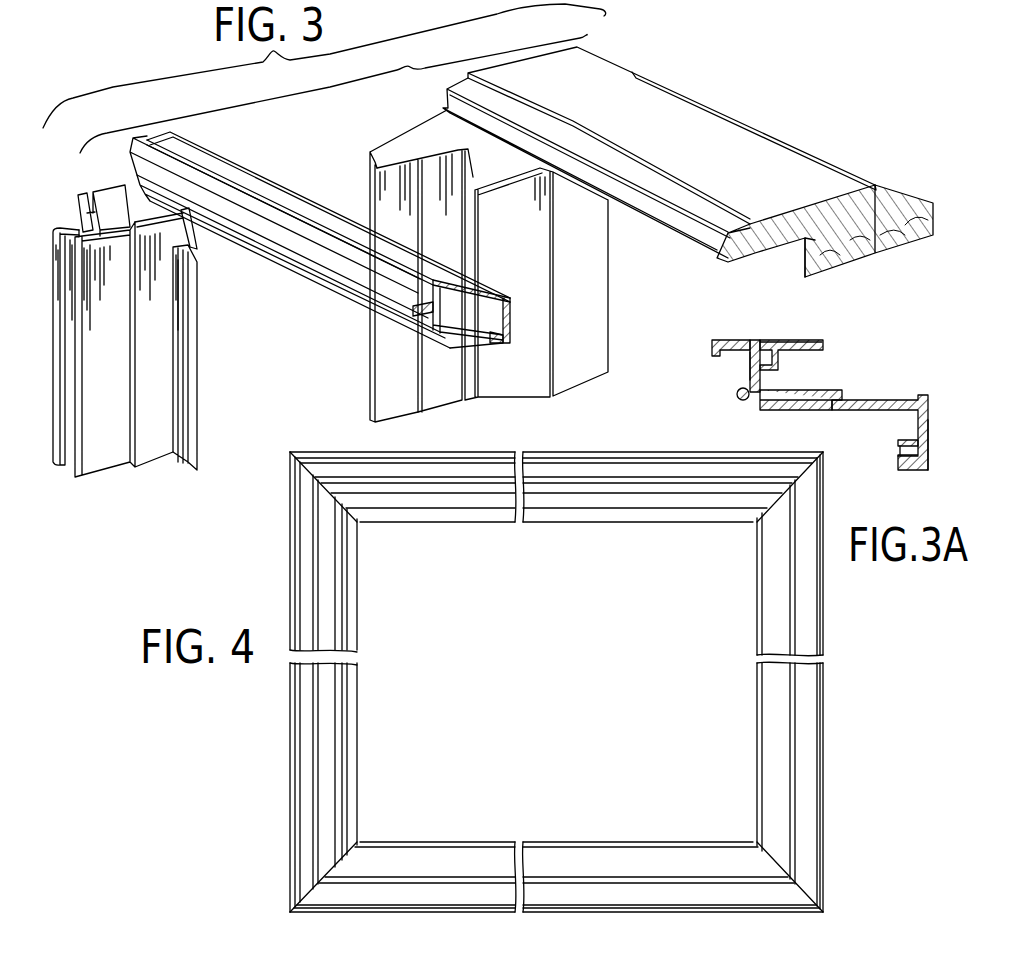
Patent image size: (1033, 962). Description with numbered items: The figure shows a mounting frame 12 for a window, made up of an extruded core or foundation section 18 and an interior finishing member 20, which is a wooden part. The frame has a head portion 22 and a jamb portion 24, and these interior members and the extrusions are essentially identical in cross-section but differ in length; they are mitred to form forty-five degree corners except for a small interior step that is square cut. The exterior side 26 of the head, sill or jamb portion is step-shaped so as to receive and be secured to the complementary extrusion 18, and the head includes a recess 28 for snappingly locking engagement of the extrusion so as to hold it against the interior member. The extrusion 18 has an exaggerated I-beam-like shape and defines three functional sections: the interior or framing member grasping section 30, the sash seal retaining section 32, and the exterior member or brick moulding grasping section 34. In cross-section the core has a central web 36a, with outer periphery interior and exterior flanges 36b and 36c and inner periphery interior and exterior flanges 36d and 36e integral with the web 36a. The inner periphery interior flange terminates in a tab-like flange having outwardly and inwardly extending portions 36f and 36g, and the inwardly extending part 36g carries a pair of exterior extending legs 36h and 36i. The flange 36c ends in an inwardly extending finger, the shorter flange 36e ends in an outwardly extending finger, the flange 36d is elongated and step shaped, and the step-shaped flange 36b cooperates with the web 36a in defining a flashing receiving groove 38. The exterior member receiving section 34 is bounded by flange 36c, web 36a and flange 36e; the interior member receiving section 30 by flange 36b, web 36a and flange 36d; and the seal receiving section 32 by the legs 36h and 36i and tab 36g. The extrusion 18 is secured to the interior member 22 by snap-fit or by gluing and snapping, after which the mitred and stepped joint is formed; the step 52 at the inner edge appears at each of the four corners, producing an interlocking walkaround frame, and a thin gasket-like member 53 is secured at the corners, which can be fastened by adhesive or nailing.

In FIG. 3, the mounting frame 12 is at (324, 78).
In FIG. 3, the extruded core 18 is at (110, 472).
In FIG. 4, the extruded core 18 is at (295, 565).
In FIG. 3, the interior finishing member 20 is at (688, 169).
In FIG. 4, the interior finishing member 20 is at (822, 673).
In FIG. 3, the head portion 22 is at (675, 93).
In FIG. 3, the jamb portion 24 is at (393, 143).
In FIG. 3, the exterior side of head portion 26 is at (672, 237).
In FIG. 3, the recess 28 is at (803, 240).
In FIG. 3, the interior member grasping section 30 is at (364, 292).
In FIG. 3A, the interior member grasping section 30 is at (792, 360).
In FIG. 3, the sash seal retaining section 32 is at (497, 340).
In FIG. 3A, the sash seal retaining section 32 is at (898, 456).
In FIG. 3, the exterior member grasping section 34 is at (413, 313).
In FIG. 3A, the exterior member grasping section 34 is at (740, 368).
In FIG. 3A, the central web 36a is at (750, 377).
In FIG. 3A, the outer periphery interior flange 36b is at (790, 340).
In FIG. 3A, the outer periphery exterior flange 36c is at (728, 340).
In FIG. 3A, the inner periphery interior flange 36d is at (823, 403).
In FIG. 3A, the inner periphery exterior flange 36e is at (745, 402).
In FIG. 3A, the outwardly extending portion 36f is at (937, 390).
In FIG. 3A, the inwardly extending portion 36g is at (928, 423).
In FIG. 3A, the exterior extending leg 36h is at (913, 441).
In FIG. 3A, the exterior extending leg 36i is at (917, 470).
In FIG. 3A, the flashing receiving groove 38 is at (768, 338).
In FIG. 4, the step 52 is at (757, 520).
In FIG. 4, the gasket-like member 53 is at (307, 468).